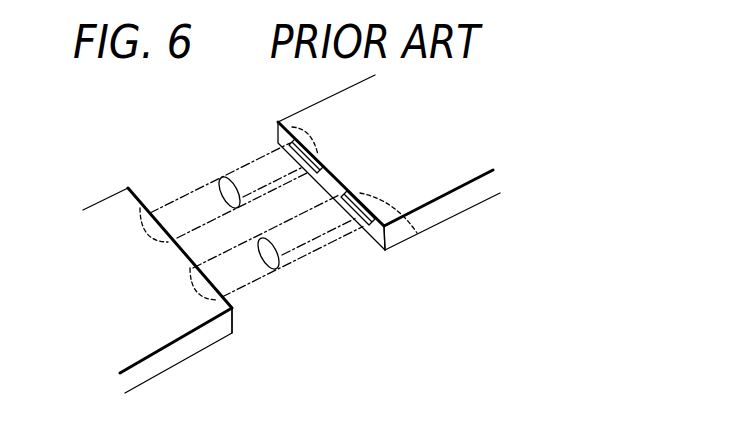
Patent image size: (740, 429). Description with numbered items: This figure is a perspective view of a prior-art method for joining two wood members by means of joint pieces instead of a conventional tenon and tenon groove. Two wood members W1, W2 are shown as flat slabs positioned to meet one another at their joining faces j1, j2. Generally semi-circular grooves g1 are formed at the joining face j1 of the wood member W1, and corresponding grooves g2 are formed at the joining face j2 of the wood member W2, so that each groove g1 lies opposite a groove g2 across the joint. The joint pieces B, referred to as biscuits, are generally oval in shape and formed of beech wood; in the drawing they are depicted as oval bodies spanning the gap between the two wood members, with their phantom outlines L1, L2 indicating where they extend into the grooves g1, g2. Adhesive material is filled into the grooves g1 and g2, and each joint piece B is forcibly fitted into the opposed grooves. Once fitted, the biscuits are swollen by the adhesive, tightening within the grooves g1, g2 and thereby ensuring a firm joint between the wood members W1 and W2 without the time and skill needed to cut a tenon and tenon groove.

The wood member W1 is at (329, 105).
The wood member W2 is at (103, 203).
The groove g1 is at (290, 126).
The groove g2 is at (140, 206).
The optical fibers of first substrate L1 is at (312, 133).
The optical fibers of second substrate L2 is at (145, 218).
The joint piece B is at (283, 257).
The joining face j1 is at (374, 236).
The joining face j2 is at (237, 315).